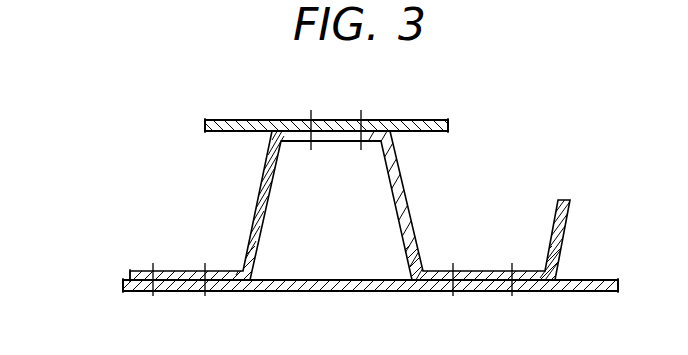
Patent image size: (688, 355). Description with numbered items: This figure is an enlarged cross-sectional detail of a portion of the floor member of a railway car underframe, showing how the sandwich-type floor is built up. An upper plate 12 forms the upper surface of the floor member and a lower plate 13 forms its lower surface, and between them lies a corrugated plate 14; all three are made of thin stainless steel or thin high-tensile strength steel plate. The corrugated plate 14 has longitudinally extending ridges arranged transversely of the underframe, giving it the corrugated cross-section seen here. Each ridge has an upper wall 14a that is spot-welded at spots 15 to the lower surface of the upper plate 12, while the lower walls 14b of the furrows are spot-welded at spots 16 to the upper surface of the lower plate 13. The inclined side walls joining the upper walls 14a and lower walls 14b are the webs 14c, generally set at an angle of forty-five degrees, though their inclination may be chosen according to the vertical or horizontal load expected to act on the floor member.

The upper plate 12 is at (233, 119).
The lower plate 13 is at (309, 292).
The corrugated plate 14 is at (258, 190).
The upper wall 14a is at (289, 131).
The lower wall 14b is at (482, 271).
The web 14c is at (404, 191).
The spot weld 15 is at (312, 112).
The spot weld 16 is at (153, 295).